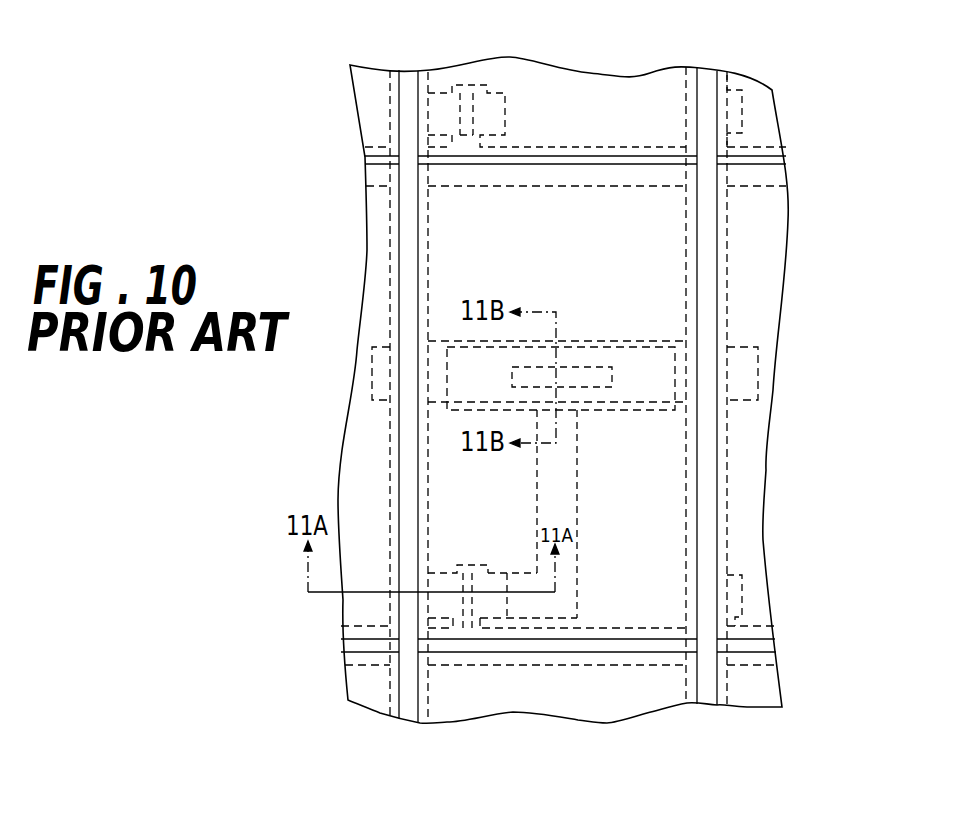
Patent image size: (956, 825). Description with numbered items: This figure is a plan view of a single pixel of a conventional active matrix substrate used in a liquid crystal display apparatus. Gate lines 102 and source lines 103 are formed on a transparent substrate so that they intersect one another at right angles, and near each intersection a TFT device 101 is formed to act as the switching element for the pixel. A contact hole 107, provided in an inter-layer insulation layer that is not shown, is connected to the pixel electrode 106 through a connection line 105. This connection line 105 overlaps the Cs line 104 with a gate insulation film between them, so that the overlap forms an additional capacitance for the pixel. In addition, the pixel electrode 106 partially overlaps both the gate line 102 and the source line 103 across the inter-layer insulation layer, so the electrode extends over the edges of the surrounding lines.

The TFT device 101 is at (470, 556).
The gate line 102 is at (762, 644).
The source line 103 is at (700, 222).
The Cs line 104 is at (748, 370).
The connection line 105 is at (563, 466).
The pixel electrode 106 is at (443, 265).
The contact hole 107 is at (612, 383).